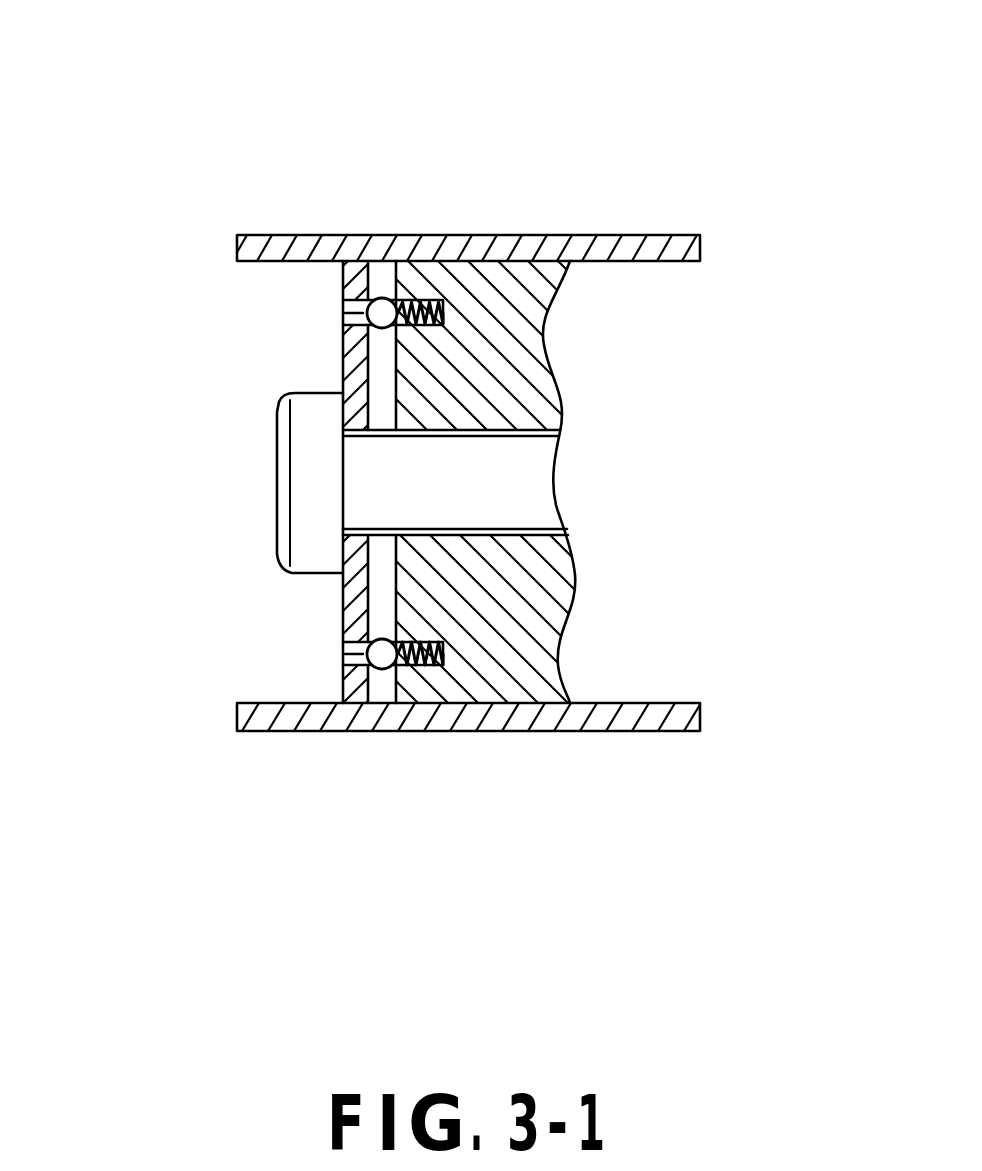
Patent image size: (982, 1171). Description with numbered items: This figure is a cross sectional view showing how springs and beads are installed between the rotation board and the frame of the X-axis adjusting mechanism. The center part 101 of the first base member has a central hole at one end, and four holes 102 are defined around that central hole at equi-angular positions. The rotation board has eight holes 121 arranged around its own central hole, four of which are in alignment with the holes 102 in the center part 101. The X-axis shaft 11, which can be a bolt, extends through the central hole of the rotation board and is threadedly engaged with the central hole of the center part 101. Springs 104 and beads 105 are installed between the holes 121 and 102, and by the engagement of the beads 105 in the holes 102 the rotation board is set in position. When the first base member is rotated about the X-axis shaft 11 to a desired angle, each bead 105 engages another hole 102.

The center part 101 is at (530, 275).
The holes 102 is at (414, 295).
The springs 104 is at (443, 302).
The beads 105 is at (378, 310).
The holes 121 is at (343, 312).
The X-axis shaft 11 is at (537, 478).